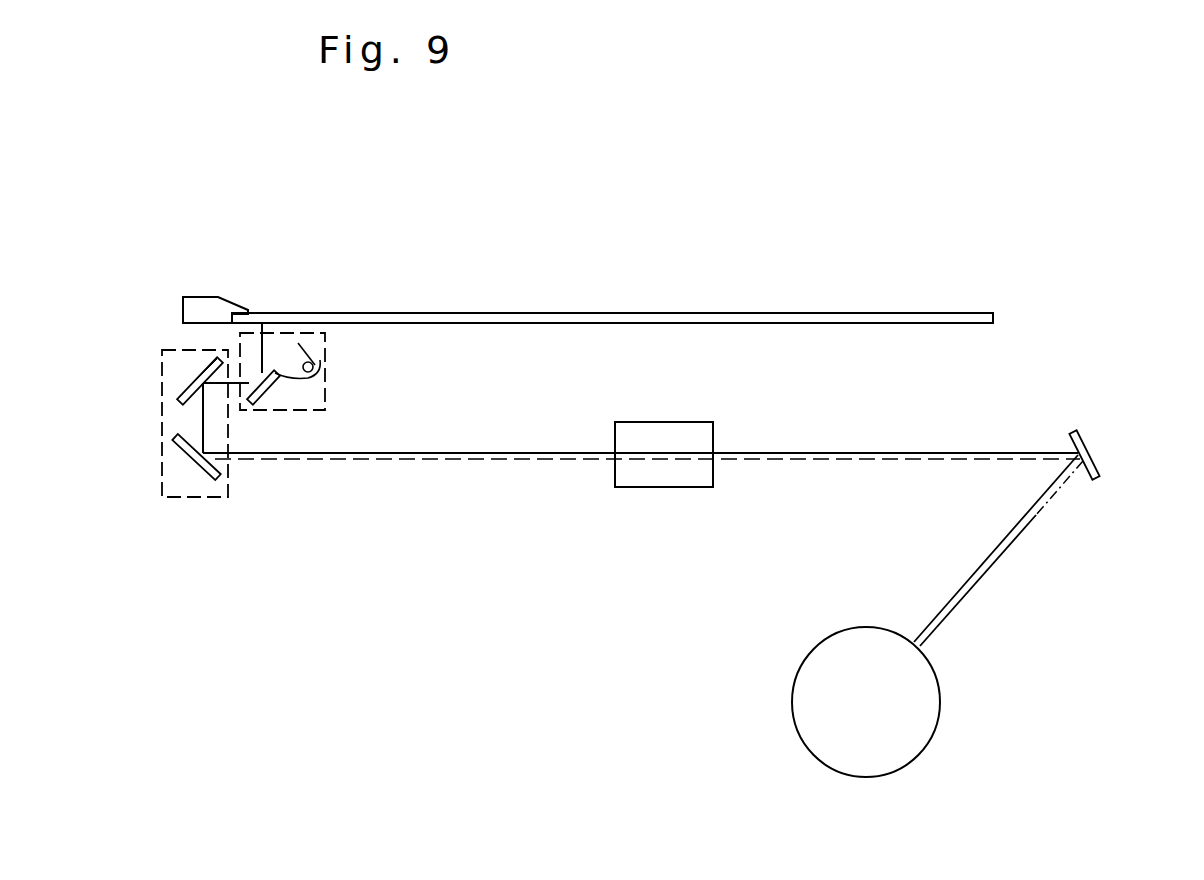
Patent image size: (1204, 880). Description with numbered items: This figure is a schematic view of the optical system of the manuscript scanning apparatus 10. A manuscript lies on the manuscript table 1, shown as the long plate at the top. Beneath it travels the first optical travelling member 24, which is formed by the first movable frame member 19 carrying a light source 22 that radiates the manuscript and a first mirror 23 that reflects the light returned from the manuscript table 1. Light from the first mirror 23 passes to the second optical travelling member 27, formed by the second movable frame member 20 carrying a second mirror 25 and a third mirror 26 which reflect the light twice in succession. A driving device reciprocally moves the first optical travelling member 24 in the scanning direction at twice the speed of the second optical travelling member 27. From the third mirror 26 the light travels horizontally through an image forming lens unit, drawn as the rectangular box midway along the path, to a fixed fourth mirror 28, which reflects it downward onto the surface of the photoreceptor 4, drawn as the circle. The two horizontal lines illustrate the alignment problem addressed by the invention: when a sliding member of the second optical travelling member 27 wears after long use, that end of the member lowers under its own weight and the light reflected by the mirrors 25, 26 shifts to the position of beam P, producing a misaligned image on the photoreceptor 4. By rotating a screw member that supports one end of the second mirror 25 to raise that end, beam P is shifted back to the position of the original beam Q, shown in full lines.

The manuscript table 1 is at (817, 318).
The manuscript scanning apparatus 10 is at (607, 345).
The first optical travelling member 24 is at (390, 237).
The first movable frame member 19 is at (303, 332).
The first mirror 23 is at (270, 368).
The light source 22 is at (330, 356).
The second optical travelling member 27 is at (101, 293).
The second movable frame member 20 is at (160, 390).
The second mirror 25 is at (182, 364).
The third mirror 26 is at (178, 440).
The beam P is at (450, 457).
The beam Q is at (520, 452).
The fourth mirror 28 is at (1098, 470).
The photoreceptor 4 is at (890, 775).